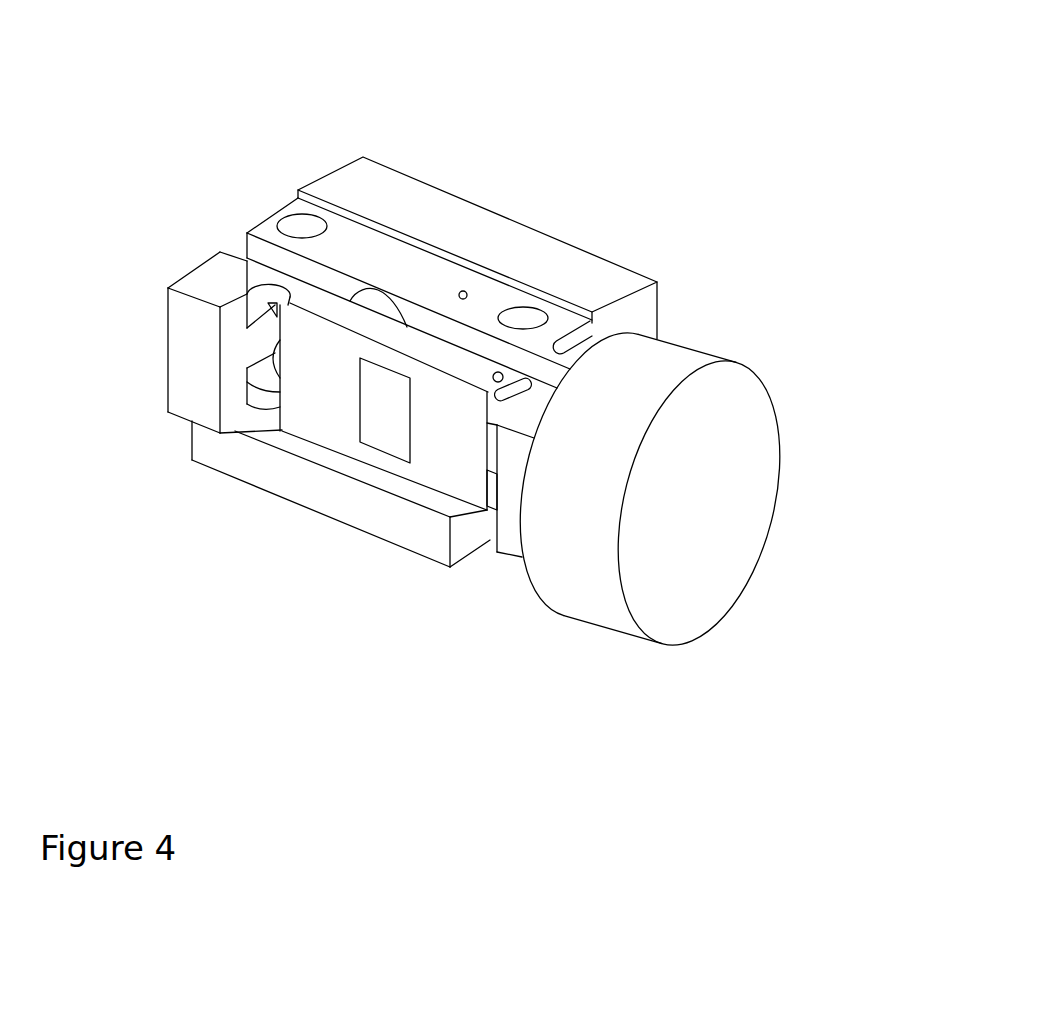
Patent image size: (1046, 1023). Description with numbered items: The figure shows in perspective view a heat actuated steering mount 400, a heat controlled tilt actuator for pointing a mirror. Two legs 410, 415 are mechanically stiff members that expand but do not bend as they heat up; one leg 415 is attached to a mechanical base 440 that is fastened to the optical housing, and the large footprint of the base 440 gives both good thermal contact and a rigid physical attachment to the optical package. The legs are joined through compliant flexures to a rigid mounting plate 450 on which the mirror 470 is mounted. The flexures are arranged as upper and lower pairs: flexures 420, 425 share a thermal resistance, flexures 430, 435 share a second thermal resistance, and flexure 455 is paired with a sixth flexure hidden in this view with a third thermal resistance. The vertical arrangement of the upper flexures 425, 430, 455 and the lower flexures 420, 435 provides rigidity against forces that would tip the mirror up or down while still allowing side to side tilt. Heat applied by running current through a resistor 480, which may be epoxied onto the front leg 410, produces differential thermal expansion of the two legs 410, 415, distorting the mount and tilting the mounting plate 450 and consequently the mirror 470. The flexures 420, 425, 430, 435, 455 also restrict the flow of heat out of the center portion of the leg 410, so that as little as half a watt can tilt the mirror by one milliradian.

The linear actuator assembly 400 is at (464, 358).
The leg 410 is at (474, 353).
The leg 415 is at (505, 285).
The flexure 420 is at (243, 407).
The flexure 425 is at (266, 280).
The flexure 430 is at (510, 398).
The flexure 435 is at (491, 505).
The mechanical base 440 is at (425, 193).
The rigid mounting plate 450 is at (507, 528).
The flexure 455 is at (573, 345).
The mirror 470 is at (738, 458).
The resistor 480 is at (374, 416).